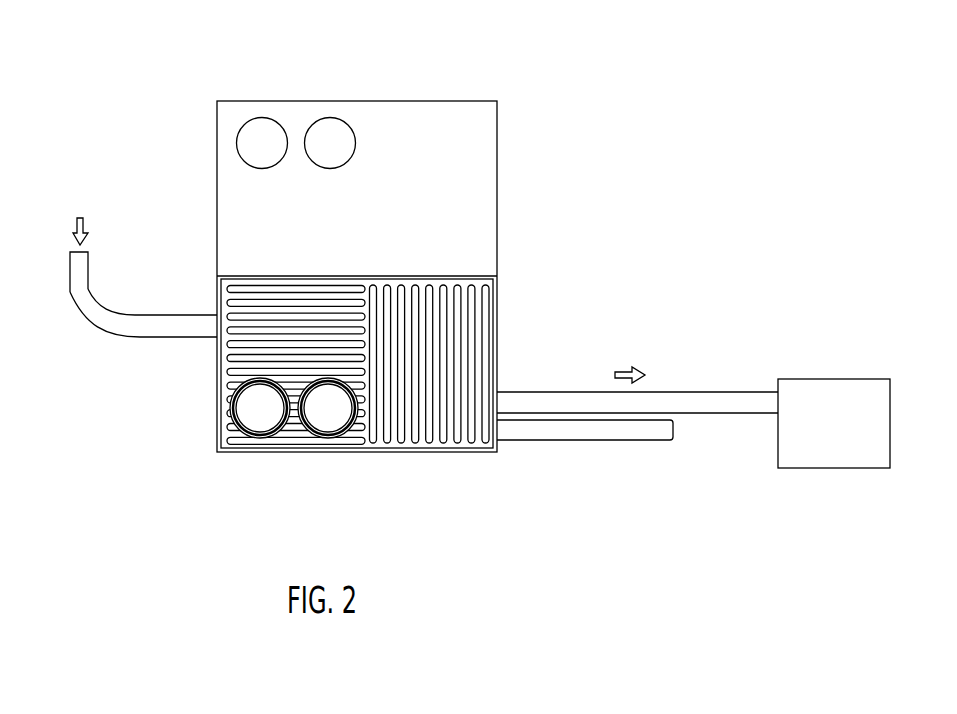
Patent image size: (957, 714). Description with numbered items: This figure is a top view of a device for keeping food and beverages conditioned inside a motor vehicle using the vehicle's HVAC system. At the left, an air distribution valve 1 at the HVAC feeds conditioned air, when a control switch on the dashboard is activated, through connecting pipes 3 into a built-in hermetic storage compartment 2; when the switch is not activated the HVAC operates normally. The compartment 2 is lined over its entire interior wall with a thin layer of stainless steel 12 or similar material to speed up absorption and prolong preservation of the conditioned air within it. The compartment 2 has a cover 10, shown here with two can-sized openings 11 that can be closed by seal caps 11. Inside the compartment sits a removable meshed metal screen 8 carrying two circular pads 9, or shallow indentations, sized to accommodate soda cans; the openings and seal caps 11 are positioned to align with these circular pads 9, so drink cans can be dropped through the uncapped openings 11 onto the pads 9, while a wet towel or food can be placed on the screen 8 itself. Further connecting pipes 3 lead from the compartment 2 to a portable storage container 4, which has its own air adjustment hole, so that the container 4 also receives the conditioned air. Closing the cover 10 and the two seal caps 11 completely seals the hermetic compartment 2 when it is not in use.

The air distribution valve 1 is at (124, 257).
The hermetic storage compartment 2 is at (410, 276).
The connecting pipes 3 is at (680, 347).
The portable storage container 4 is at (855, 392).
The meshed metal screen 8 is at (481, 311).
The circular pads 9 is at (328, 408).
The cover 10 is at (360, 168).
The openings and seal caps 11 is at (322, 117).
The thin layer of stainless steel 12 is at (431, 338).